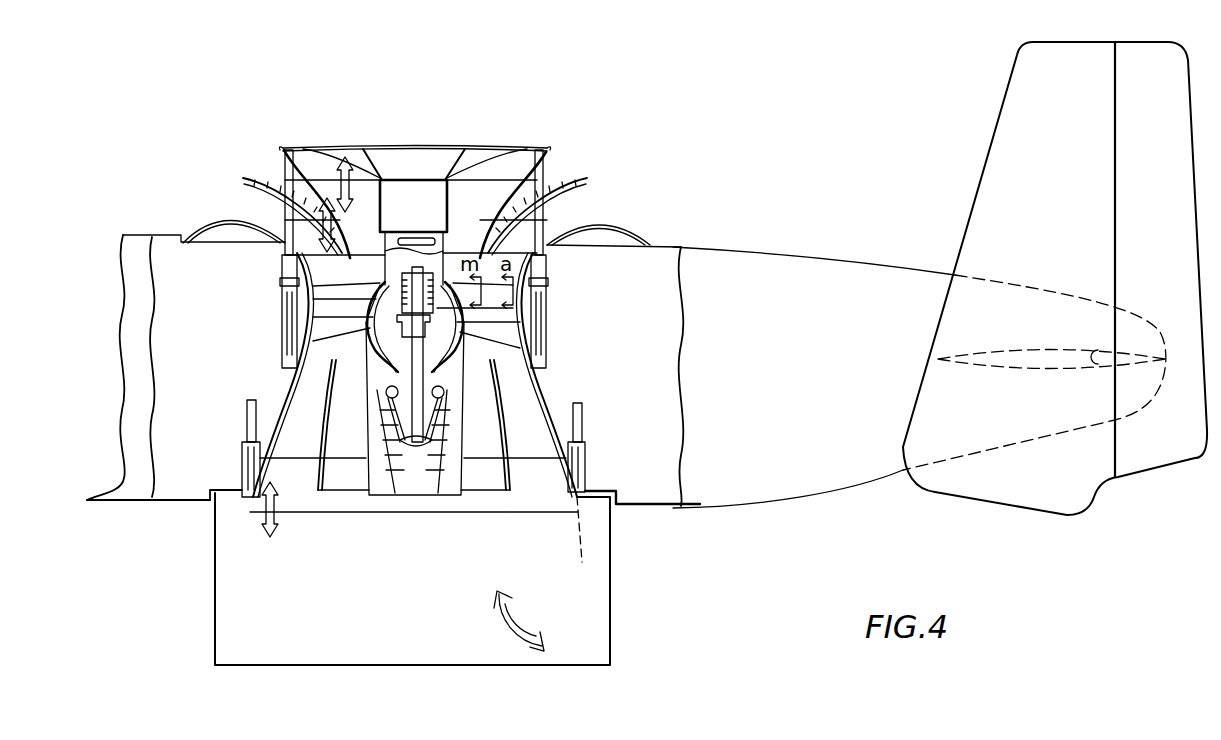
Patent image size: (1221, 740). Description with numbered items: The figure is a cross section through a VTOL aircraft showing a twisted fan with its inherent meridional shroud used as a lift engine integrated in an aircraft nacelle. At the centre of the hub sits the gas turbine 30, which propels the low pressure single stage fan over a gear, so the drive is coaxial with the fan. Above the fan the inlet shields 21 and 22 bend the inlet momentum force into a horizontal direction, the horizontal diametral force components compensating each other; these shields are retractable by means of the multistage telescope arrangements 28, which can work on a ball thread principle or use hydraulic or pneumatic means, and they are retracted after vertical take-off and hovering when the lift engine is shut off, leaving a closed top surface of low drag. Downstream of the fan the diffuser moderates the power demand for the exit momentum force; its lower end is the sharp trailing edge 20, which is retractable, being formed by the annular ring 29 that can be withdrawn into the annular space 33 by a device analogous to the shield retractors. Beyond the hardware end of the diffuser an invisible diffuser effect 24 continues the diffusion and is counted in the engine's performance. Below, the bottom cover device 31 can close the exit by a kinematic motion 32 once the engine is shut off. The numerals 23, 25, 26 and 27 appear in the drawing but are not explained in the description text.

The sharp trailing edge 20 is at (252, 507).
The inlet shield 21 is at (480, 147).
The inlet shield 22 is at (588, 178).
The nacelle cowl 23 is at (538, 383).
The invisible diffuser effect 24 is at (578, 533).
The fan rotor 25 is at (370, 290).
The turbine stage 26 is at (343, 314).
The exhaust door 27 is at (288, 442).
The multistage telescope arrangement 28 is at (548, 298).
The annular ring 29 is at (215, 518).
The gas turbine 30 is at (415, 391).
The bottom cover device 31 is at (603, 607).
The kinematic motion 32 is at (512, 608).
The annular space 33 is at (243, 447).